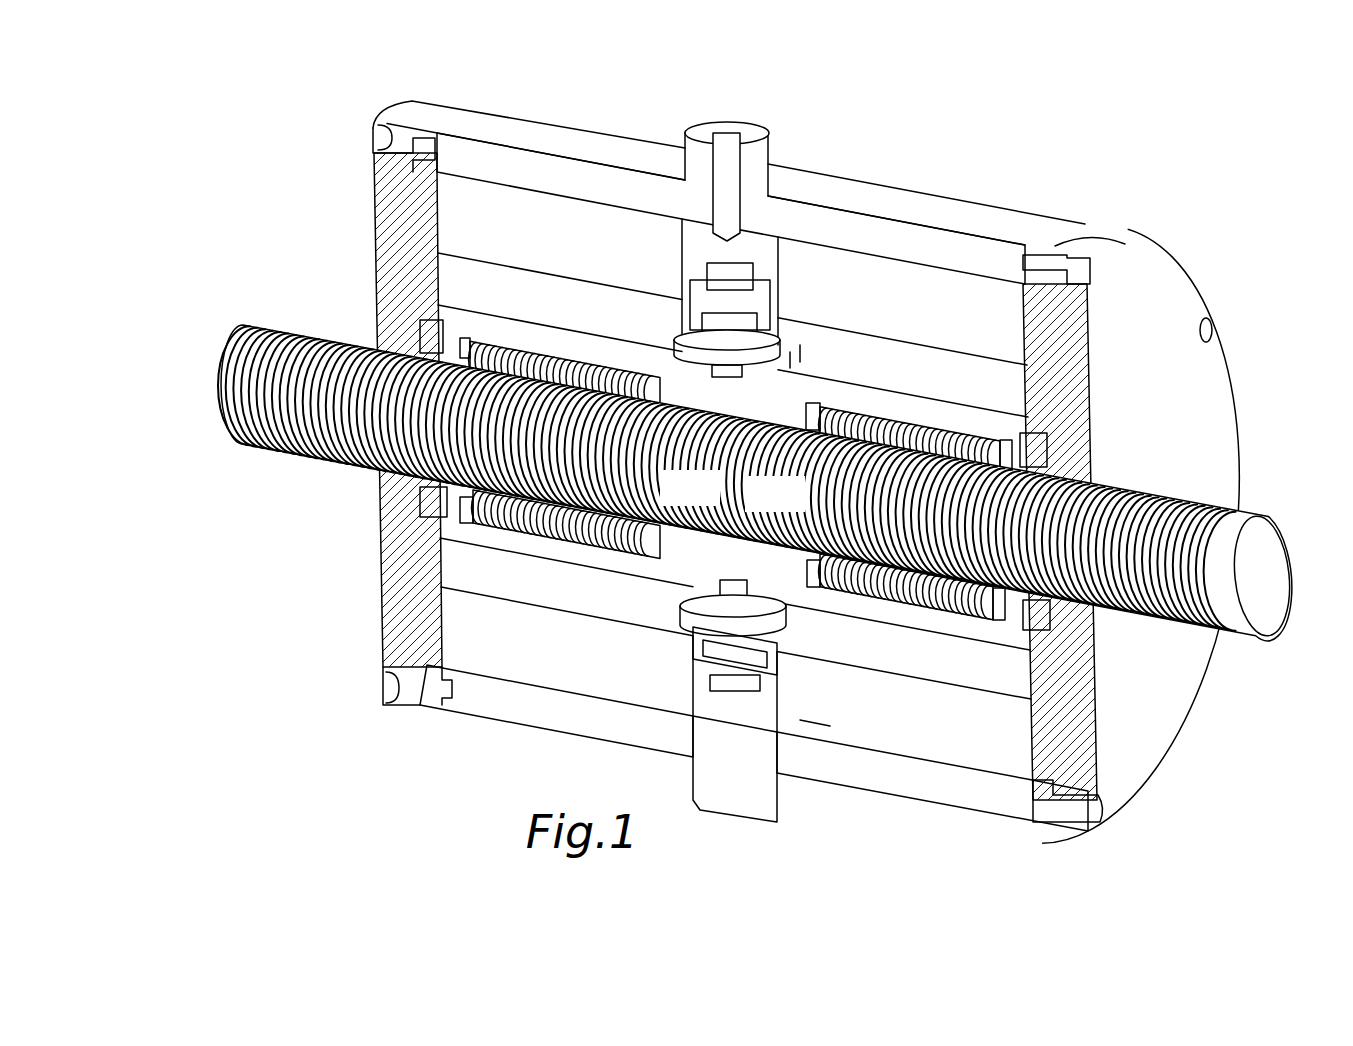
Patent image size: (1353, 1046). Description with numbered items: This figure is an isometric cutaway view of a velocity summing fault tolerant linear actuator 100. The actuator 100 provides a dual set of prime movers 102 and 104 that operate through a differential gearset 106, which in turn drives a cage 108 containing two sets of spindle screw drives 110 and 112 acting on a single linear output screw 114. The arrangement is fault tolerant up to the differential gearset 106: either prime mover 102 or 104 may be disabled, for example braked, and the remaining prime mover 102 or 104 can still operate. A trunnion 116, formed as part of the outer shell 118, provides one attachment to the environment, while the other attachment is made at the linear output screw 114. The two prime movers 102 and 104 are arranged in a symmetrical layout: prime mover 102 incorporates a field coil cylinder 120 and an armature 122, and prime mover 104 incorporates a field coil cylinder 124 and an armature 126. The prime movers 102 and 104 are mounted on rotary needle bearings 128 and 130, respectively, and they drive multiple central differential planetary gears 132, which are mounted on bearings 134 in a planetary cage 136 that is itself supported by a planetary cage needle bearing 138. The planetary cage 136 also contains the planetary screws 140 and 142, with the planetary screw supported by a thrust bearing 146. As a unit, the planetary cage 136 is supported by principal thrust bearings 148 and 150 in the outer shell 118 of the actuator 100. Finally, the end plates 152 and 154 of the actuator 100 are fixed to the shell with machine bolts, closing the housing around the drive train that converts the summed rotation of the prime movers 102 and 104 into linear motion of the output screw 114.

The velocity summing fault tolerant linear actuator 100 is at (1078, 178).
The prime mover 102 is at (624, 303).
The prime mover 104 is at (970, 385).
The differential gearset 106 is at (800, 347).
The cage 108 is at (492, 330).
The spindle screw drive 110 is at (520, 530).
The spindle screw drive 112 is at (933, 603).
The linear output screw 114 is at (270, 455).
The trunnion 116 is at (748, 122).
The outer shell 118 is at (680, 752).
The field coil cylinder 120 is at (523, 650).
The armature 122 is at (497, 580).
The field coil cylinder 124 is at (837, 717).
The armature 126 is at (903, 660).
The rotary needle bearing 128 is at (663, 372).
The rotary needle bearing 130 is at (797, 373).
The central differential planetary gear 132 is at (660, 337).
The bearing 134 is at (760, 318).
The planetary cage 136 is at (706, 658).
The planetary cage needle bearing 138 is at (755, 280).
The planetary screw 140 is at (918, 425).
The planetary screw 142 is at (527, 357).
The thrust bearing 146 is at (990, 480).
The principal thrust bearing 148 is at (1047, 457).
The principal thrust bearing 150 is at (428, 338).
The end plate 152 is at (377, 615).
The end plate 154 is at (1188, 303).